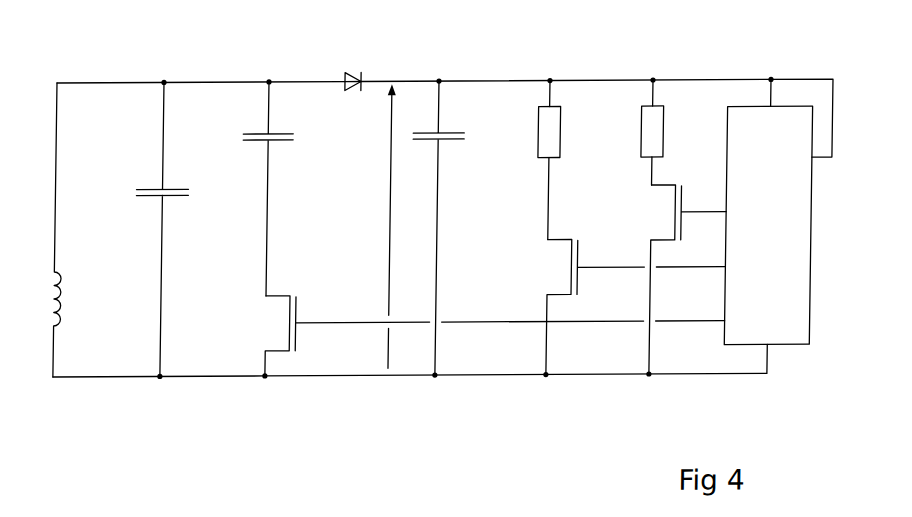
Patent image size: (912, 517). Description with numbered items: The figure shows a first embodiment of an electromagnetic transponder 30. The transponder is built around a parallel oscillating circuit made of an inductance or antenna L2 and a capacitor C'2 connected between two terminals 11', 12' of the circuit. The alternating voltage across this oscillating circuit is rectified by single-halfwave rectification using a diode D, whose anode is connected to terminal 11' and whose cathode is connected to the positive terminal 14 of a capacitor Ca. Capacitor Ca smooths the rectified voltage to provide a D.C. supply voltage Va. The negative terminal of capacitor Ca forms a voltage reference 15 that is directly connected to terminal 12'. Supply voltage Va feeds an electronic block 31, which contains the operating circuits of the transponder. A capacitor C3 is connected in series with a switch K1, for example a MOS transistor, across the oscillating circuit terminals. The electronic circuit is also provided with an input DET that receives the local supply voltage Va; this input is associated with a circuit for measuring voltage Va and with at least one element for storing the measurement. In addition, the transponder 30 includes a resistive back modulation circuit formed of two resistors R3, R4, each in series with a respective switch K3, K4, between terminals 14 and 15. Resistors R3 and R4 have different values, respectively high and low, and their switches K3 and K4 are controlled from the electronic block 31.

The terminal 11' is at (201, 54).
The terminal 12' is at (158, 404).
The positive terminal 14 is at (491, 81).
The voltage reference 15 is at (415, 380).
The transponder 30 is at (485, 261).
The electronic block 31 is at (768, 244).
The inductance or antenna L2 is at (76, 230).
The capacitor C'2 is at (171, 229).
The capacitor C3 is at (272, 189).
The diode D is at (350, 64).
The D.C. supply voltage Va is at (405, 226).
The capacitor Ca is at (442, 228).
The resistor R3 is at (567, 159).
The resistor R4 is at (672, 132).
The switch K1 is at (280, 323).
The switch K3 is at (564, 269).
The switch K4 is at (664, 215).
The input DET is at (791, 350).